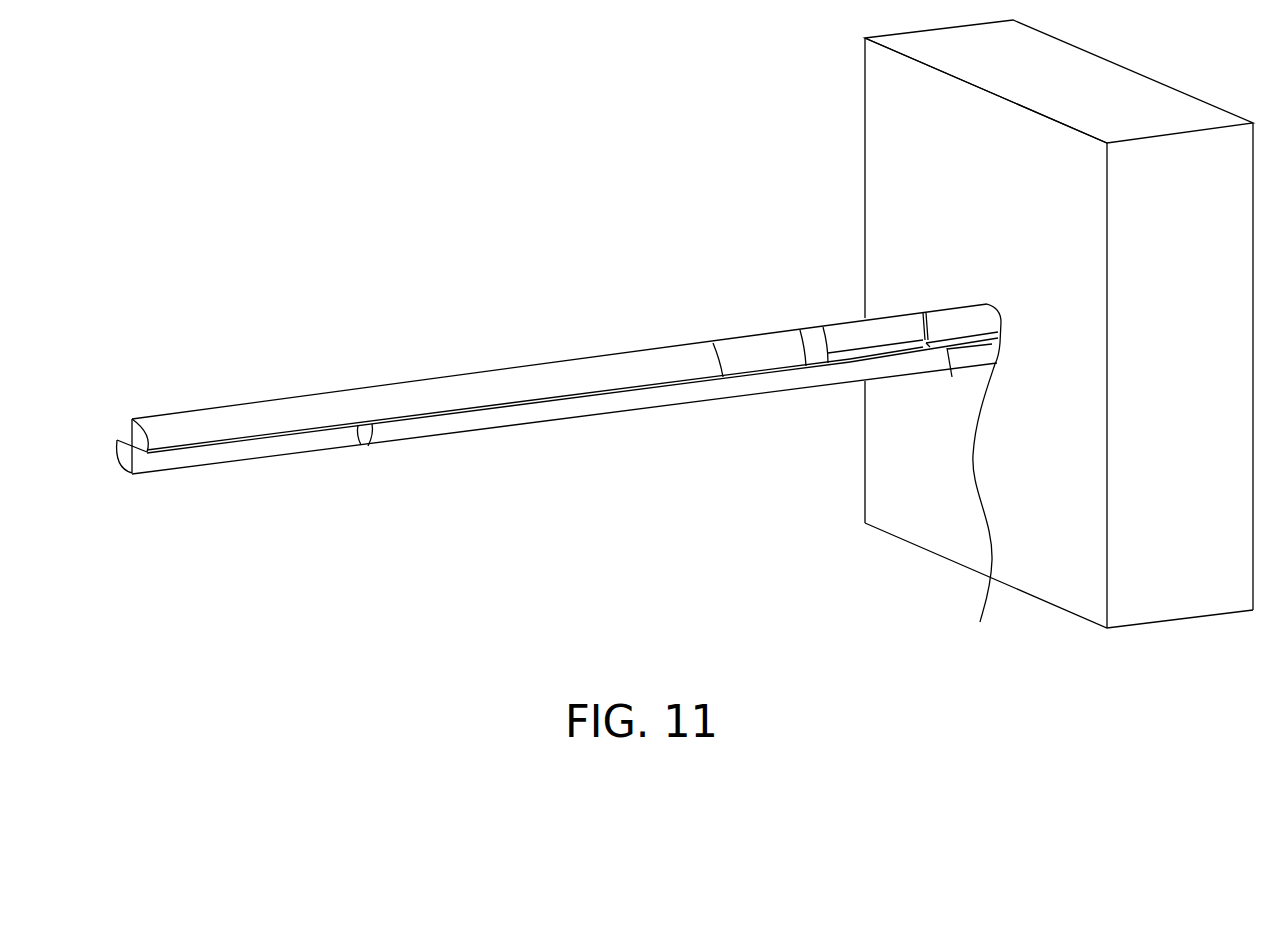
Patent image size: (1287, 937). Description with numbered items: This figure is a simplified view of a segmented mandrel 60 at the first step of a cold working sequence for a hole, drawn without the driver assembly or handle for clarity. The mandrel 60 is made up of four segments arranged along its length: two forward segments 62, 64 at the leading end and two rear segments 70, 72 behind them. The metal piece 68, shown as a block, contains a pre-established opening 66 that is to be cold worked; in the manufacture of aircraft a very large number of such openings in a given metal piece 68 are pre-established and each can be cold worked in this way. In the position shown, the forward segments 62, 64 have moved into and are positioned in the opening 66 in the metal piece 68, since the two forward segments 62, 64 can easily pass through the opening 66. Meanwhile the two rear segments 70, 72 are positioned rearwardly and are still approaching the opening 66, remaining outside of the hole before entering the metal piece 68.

The segmented mandrel 60 is at (566, 325).
The forward segment 62 is at (895, 365).
The forward segment 64 is at (887, 327).
The opening 66 is at (978, 509).
The metal piece 68 is at (888, 216).
The rear segment 70 is at (277, 455).
The rear segment 72 is at (678, 360).